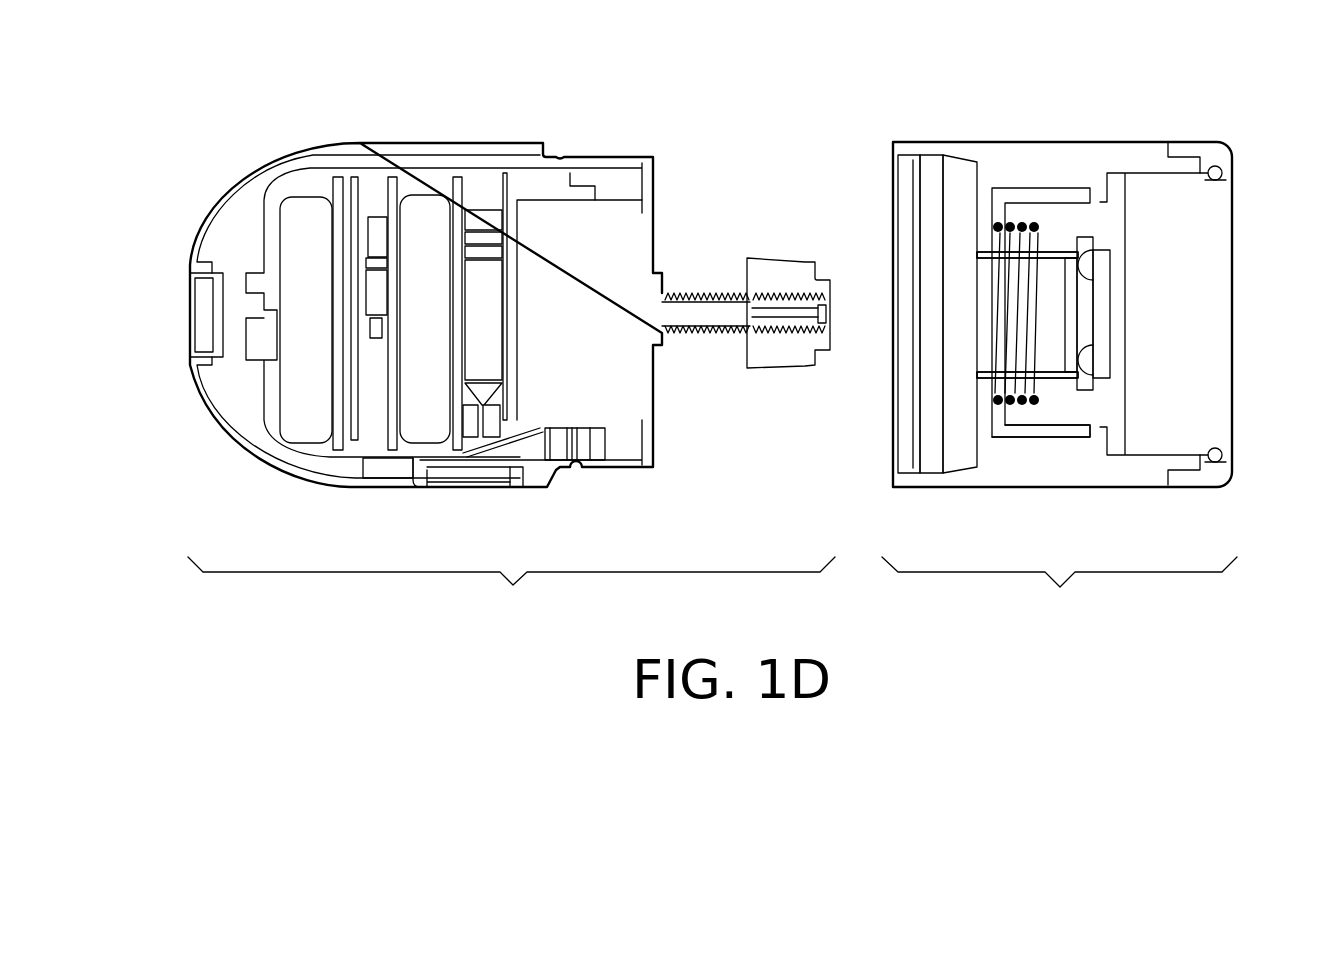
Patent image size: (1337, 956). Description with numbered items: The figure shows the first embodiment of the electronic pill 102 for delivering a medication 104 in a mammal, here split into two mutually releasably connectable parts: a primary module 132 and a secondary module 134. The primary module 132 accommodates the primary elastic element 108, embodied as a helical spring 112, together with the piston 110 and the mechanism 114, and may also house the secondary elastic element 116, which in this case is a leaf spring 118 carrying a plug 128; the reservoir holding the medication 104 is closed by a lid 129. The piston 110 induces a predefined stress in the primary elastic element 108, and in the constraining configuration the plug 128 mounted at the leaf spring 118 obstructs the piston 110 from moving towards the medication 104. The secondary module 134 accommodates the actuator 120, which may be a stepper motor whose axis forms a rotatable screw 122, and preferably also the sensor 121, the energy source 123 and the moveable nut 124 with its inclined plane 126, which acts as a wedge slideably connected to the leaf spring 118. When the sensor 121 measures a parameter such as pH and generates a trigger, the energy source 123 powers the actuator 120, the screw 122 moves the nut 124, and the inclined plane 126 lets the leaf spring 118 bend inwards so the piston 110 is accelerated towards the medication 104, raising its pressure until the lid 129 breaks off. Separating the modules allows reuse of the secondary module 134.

The electronic pill 102 is at (213, 135).
The medication 104 is at (1158, 407).
The primary elastic element 108 is at (1000, 215).
The piston 110 is at (1053, 407).
The helical spring 112 is at (1016, 313).
The mechanism 114 is at (1050, 256).
The secondary elastic element 116 is at (1027, 255).
The leaf spring 118 is at (1027, 375).
The actuator 120 is at (554, 220).
The sensor 121 is at (302, 427).
The rotatable screw 122 is at (826, 315).
The energy source 123 is at (433, 425).
The moveable nut 124 is at (758, 354).
The inclined plane 126 is at (780, 368).
The plug 128 is at (1080, 242).
The lid 129 is at (1213, 376).
The primary module 132 is at (1093, 330).
The secondary module 134 is at (495, 341).